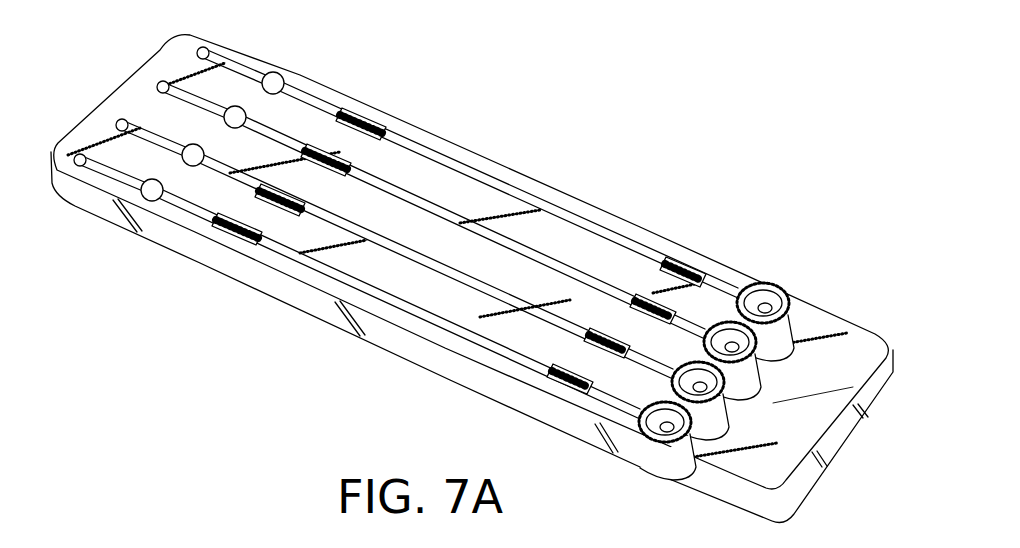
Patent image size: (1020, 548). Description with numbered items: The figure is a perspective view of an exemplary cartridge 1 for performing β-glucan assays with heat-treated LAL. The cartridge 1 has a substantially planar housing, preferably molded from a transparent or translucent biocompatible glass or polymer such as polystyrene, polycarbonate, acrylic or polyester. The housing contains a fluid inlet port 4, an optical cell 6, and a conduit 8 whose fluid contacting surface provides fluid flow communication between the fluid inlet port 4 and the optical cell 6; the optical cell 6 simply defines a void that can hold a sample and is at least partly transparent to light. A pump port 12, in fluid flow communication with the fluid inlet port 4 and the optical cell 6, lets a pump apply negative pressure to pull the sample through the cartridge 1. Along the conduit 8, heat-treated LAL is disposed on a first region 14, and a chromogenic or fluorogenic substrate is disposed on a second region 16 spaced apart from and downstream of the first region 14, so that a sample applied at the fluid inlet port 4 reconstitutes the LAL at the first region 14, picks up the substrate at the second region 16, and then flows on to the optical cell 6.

The cartridge 1 is at (830, 447).
The fluid inlet port 4 is at (780, 342).
The optical cell 6 is at (158, 178).
The conduit 8 is at (540, 257).
The pump port 12 is at (80, 154).
The first region 14 is at (635, 298).
The second region 16 is at (247, 222).